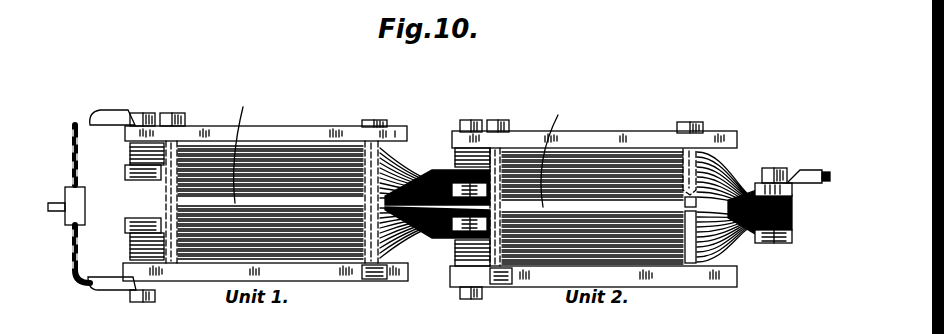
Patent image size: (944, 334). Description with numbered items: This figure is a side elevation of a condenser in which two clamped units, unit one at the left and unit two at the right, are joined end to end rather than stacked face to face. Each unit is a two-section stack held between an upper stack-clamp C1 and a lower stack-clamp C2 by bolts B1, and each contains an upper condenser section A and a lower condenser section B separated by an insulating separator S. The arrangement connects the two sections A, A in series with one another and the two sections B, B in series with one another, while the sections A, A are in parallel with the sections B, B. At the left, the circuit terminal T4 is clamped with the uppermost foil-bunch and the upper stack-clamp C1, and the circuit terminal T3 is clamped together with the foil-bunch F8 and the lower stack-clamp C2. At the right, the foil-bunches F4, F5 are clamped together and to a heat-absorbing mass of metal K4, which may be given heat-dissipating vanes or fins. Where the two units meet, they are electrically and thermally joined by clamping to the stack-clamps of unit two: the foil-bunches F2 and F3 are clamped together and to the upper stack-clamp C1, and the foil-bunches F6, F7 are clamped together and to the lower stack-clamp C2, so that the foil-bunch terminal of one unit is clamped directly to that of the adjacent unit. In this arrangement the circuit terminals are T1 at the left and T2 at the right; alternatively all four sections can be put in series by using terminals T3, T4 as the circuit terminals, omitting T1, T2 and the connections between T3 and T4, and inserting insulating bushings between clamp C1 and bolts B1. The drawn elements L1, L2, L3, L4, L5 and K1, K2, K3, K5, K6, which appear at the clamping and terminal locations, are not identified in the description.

The circuit terminal T4 is at (98, 115).
The lock nut L1 is at (140, 112).
The bolts B1 is at (178, 118).
The insulating separator S is at (399, 148).
The condenser sections A is at (270, 167).
The upper stack-clamp C1 is at (303, 134).
The lower stack-clamp C2 is at (205, 268).
The foil-bunch F2 is at (415, 157).
The foil-bunch F3 is at (455, 148).
The lock nut L2 is at (465, 120).
The foil-bunch F4 is at (130, 152).
The lock nut L3 is at (770, 168).
The clamp K3 is at (790, 182).
The circuit terminal T2 is at (810, 178).
The circuit terminal T1 is at (55, 198).
The clamp block K1 is at (127, 178).
The clamp block K6 is at (140, 228).
The foil-bunch F8 is at (127, 242).
The circuit terminal T3 is at (102, 283).
The lock nut L5 is at (147, 295).
The condenser sections B is at (303, 240).
The foil-bunch F7 is at (420, 257).
The foil-bunch F6 is at (450, 257).
The lock nut L4 is at (477, 299).
The clamp block K2 is at (450, 193).
The clamp block K5 is at (453, 219).
The heat-absorbing mass of metal K4 is at (783, 248).
The foil-bunch F5 is at (732, 238).